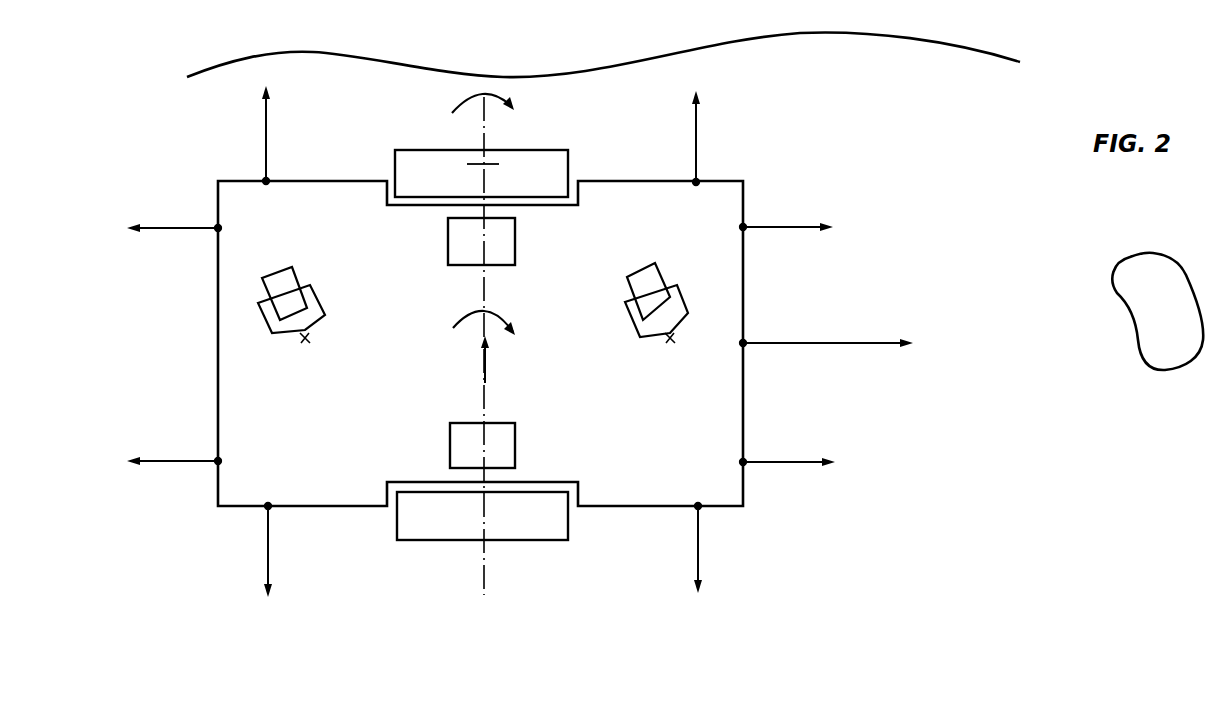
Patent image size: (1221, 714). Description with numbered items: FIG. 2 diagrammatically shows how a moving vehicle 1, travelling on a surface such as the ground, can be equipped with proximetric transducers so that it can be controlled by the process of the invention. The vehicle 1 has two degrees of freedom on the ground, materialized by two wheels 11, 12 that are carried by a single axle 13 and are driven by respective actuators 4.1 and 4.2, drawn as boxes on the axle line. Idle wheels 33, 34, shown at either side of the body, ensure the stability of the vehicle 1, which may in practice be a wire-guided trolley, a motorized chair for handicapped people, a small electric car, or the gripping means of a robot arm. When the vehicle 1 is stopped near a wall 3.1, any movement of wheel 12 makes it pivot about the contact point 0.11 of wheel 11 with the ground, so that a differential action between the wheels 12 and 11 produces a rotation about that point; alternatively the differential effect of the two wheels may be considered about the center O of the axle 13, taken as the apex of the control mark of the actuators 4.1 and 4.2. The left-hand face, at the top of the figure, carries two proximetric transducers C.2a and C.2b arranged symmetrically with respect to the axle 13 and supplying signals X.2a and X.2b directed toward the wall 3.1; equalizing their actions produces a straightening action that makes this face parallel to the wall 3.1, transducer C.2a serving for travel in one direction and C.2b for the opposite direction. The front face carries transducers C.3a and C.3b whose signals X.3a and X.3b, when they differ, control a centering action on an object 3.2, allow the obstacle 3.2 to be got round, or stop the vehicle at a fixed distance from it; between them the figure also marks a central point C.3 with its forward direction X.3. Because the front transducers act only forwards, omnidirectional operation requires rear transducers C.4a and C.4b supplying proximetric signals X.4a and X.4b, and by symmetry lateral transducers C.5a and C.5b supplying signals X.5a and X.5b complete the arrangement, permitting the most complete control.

The moving vehicle 1 is at (227, 352).
The wheel 11 is at (398, 153).
The wheel 12 is at (402, 524).
The axle 13 is at (485, 553).
The contact point 0.11 is at (492, 160).
The actuator 4.1 is at (448, 243).
The actuator 4.2 is at (450, 446).
The idle wheel 33 is at (662, 263).
The idle wheel 34 is at (300, 268).
The wall 3.1 is at (786, 46).
The object 3.2 is at (1136, 262).
The center of axle O is at (478, 346).
The axis X.2a is at (698, 118).
The axis X.2b is at (267, 116).
The axis X.3 is at (845, 345).
The proximetric signal X.3a is at (802, 228).
The proximetric signal X.3b is at (805, 458).
The proximetric signal X.4a is at (178, 230).
The proximetric signal X.4b is at (192, 463).
The proximetric signal X.5a is at (700, 565).
The proximetric signal X.5b is at (270, 570).
The proximetric transducer C.2a is at (698, 180).
The proximetric transducer C.2b is at (262, 180).
The point C.3 is at (745, 340).
The front transducer C.3a is at (745, 225).
The front transducer C.3b is at (748, 466).
The rear transducer C.4a is at (216, 226).
The rear transducer C.4b is at (216, 460).
The lateral transducer C.5a is at (702, 509).
The lateral transducer C.5b is at (262, 508).